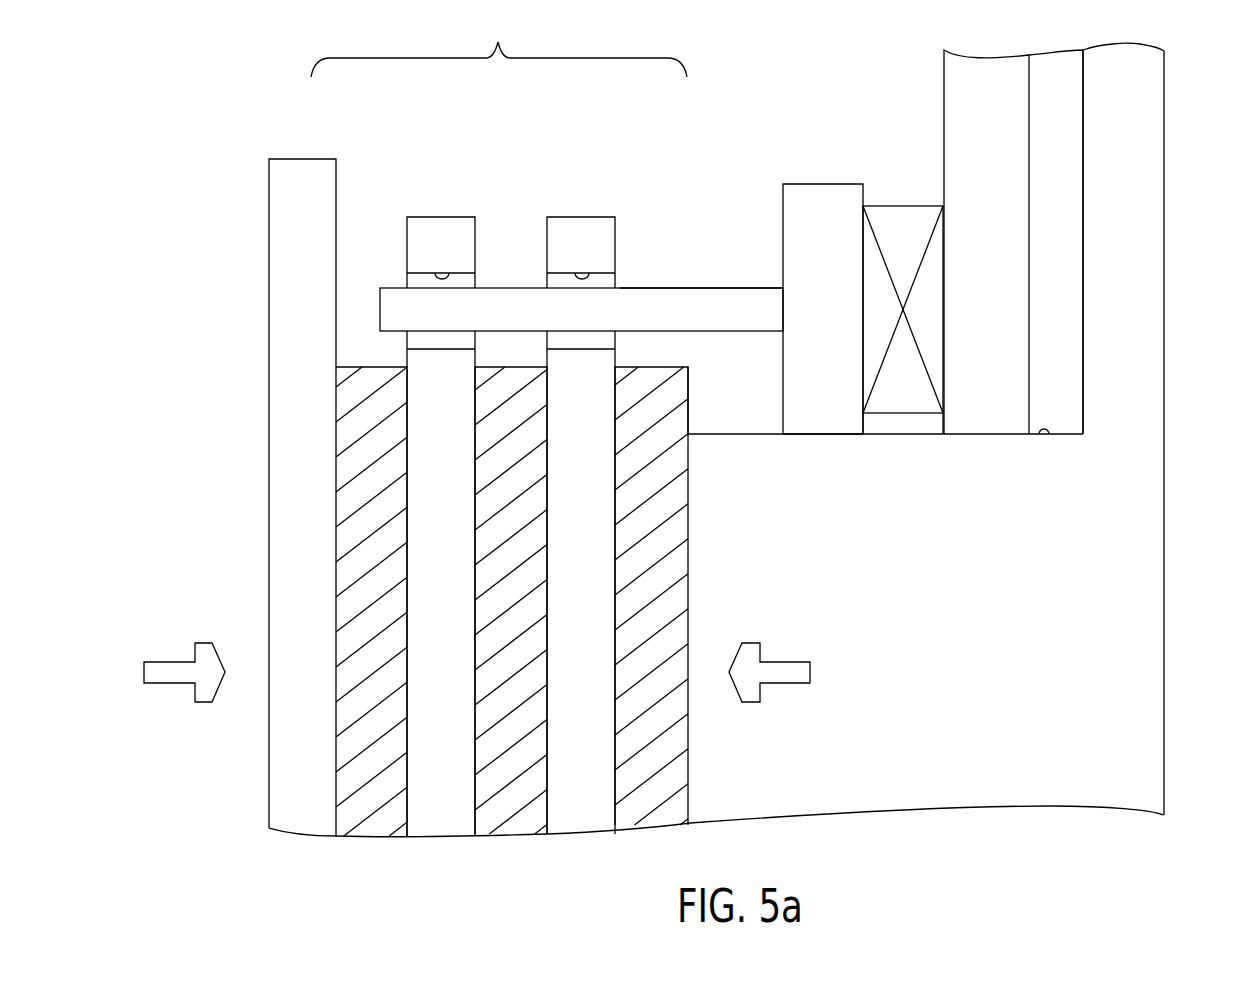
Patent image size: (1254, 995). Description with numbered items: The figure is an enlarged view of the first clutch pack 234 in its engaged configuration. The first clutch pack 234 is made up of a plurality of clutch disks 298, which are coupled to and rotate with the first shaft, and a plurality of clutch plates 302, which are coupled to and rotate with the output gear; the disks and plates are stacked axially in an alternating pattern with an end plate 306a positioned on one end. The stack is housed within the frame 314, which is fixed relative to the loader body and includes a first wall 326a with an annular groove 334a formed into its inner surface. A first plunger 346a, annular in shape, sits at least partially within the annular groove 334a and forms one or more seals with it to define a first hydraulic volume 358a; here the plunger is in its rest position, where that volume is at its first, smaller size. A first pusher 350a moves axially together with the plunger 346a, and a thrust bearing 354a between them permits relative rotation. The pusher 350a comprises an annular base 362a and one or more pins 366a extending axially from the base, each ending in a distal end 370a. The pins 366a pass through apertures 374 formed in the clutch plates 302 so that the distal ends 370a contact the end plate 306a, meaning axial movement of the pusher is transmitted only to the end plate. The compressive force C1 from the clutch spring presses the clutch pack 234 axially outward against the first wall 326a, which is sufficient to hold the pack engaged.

The first clutch pack 234 is at (499, 39).
The clutch disks 298 is at (378, 823).
The clutch plates 302 is at (448, 822).
The end plate 306a is at (281, 547).
The frame 314 is at (1150, 497).
The first wall 326a is at (1150, 653).
The annular groove 334a is at (1048, 440).
The first plunger 346a is at (985, 75).
The first pusher 350a is at (825, 192).
The thrust bearing 354a is at (898, 225).
The first hydraulic volume 358a is at (1062, 162).
The annular base 362a is at (820, 438).
The pins 366a is at (732, 288).
The distal end 370a is at (382, 311).
The apertures 374 is at (448, 272).
The compressive force C1 is at (182, 684).